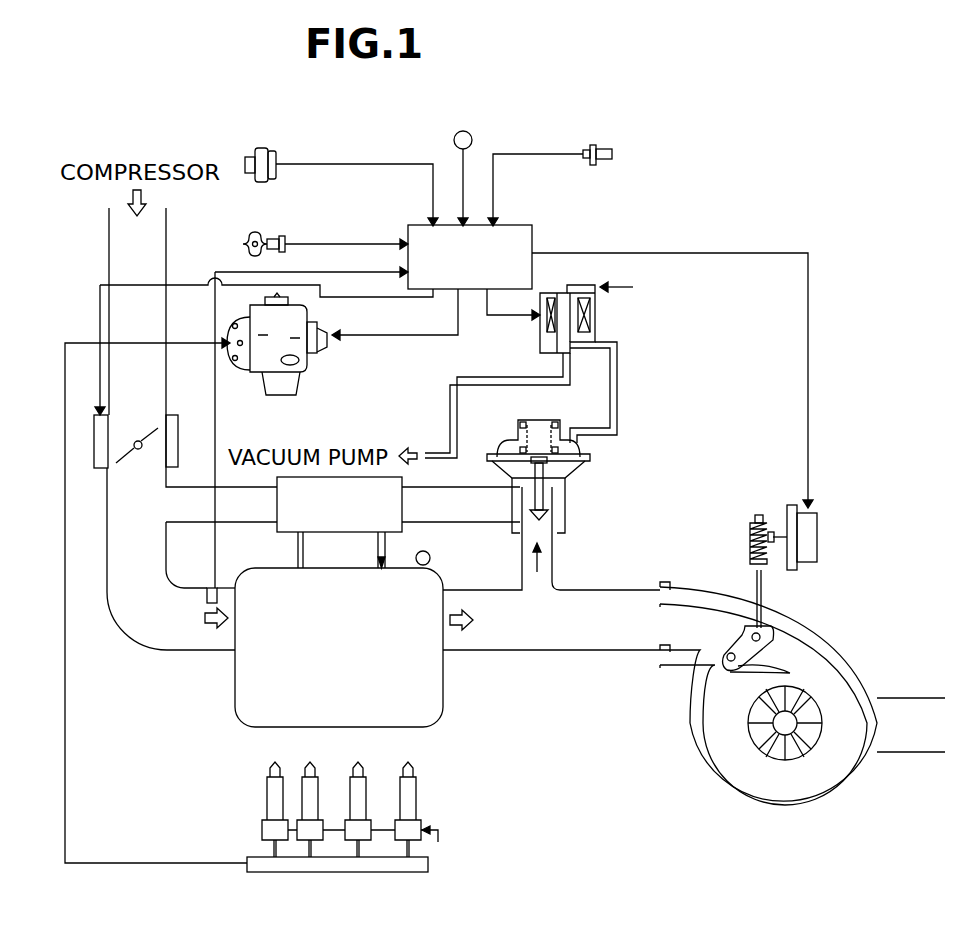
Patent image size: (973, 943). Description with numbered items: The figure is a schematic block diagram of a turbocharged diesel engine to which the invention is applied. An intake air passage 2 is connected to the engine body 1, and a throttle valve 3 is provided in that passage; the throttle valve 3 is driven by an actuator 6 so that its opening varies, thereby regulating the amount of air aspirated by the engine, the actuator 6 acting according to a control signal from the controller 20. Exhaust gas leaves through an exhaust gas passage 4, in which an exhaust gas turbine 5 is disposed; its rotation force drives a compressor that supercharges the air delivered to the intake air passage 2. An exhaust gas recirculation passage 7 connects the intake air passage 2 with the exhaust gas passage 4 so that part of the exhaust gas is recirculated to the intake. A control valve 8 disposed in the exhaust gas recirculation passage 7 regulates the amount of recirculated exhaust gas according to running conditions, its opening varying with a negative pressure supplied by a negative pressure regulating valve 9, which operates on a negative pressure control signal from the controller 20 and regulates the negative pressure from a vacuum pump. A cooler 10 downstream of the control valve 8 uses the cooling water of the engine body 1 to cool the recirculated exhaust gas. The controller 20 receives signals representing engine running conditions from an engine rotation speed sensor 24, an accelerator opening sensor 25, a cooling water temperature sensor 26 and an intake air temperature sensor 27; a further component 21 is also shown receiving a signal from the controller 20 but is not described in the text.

The engine body 1 is at (430, 708).
The intake air passage 2 is at (177, 636).
The throttle valve 3 is at (150, 428).
The exhaust gas passage 4 is at (583, 652).
The exhaust gas turbine 5 is at (850, 640).
The actuator 6 is at (97, 475).
The exhaust gas recirculation passage 7 is at (545, 576).
The control valve 8 is at (540, 502).
The negative pressure regulating valve 9 is at (595, 326).
The cooler 10 is at (293, 517).
The controller 20 is at (533, 240).
The fuel injection actuator 21 is at (292, 357).
The engine rotation speed sensor 24 is at (286, 237).
The accelerator opening sensor 25 is at (471, 132).
The cooling water temperature sensor 26 is at (600, 143).
The intake air temperature sensor 27 is at (207, 586).